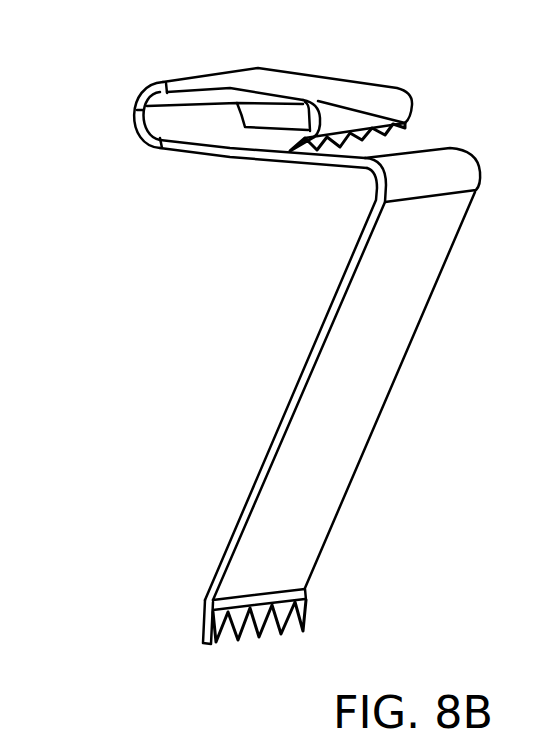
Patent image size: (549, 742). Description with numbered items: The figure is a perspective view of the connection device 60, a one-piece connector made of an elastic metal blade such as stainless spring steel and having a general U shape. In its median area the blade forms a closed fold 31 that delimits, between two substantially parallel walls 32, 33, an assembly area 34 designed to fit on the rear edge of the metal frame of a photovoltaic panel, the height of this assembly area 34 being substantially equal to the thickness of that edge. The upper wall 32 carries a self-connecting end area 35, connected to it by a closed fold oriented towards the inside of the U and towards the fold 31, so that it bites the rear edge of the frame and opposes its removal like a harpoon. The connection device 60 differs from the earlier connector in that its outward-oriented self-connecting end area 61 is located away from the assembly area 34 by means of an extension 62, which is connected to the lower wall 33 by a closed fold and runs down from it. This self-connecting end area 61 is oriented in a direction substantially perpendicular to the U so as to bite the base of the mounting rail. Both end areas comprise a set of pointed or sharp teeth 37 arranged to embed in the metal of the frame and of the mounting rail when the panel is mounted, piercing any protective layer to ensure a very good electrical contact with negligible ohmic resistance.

The closed fold 31 is at (136, 100).
The wall 32 is at (333, 79).
The wall 33 is at (263, 157).
The assembly area 34 is at (220, 121).
The self-connecting end area 35 is at (404, 128).
The teeth 37 is at (308, 592).
The connection device 60 is at (433, 97).
The self-connecting end area 61 is at (203, 606).
The extension 62 is at (405, 350).